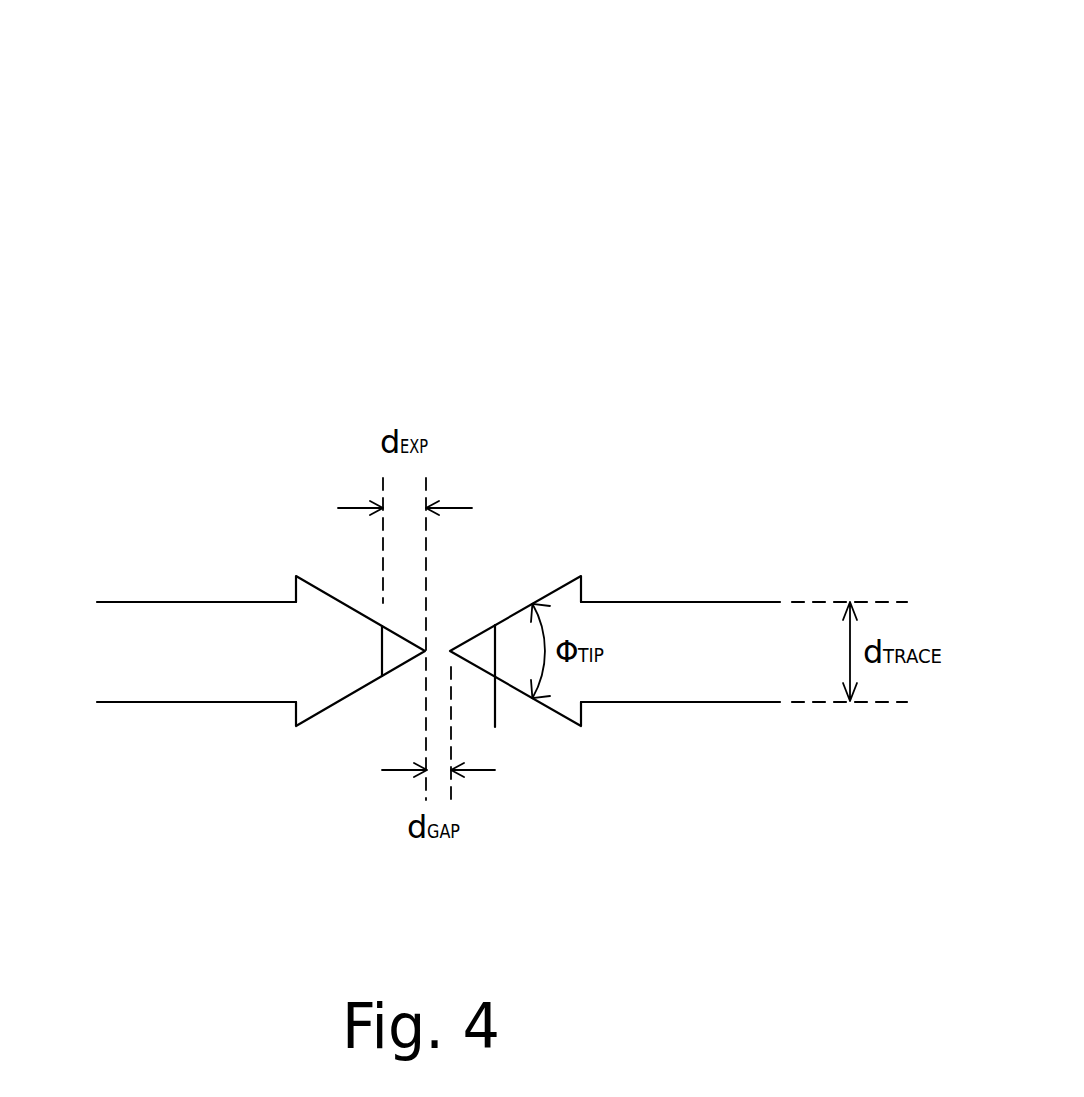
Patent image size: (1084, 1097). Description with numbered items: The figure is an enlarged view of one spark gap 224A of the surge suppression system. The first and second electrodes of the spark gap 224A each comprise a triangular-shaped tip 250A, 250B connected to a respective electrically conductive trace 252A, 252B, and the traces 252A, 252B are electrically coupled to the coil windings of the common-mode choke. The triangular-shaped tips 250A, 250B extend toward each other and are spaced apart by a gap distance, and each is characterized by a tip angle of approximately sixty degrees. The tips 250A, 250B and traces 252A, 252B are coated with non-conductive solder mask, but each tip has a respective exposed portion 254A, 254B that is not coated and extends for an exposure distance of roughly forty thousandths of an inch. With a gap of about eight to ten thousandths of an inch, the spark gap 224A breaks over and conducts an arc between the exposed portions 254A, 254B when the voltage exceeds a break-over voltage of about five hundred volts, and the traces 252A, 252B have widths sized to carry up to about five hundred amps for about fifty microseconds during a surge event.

The spark gap 224A is at (443, 310).
The triangular-shaped tip 250A is at (338, 677).
The triangular-shaped tip 250B is at (556, 700).
The electrically conductive trace 252A is at (172, 663).
The electrically conductive trace 252B is at (705, 663).
The exposed portion 254A is at (397, 653).
The exposed portion 254B is at (483, 652).